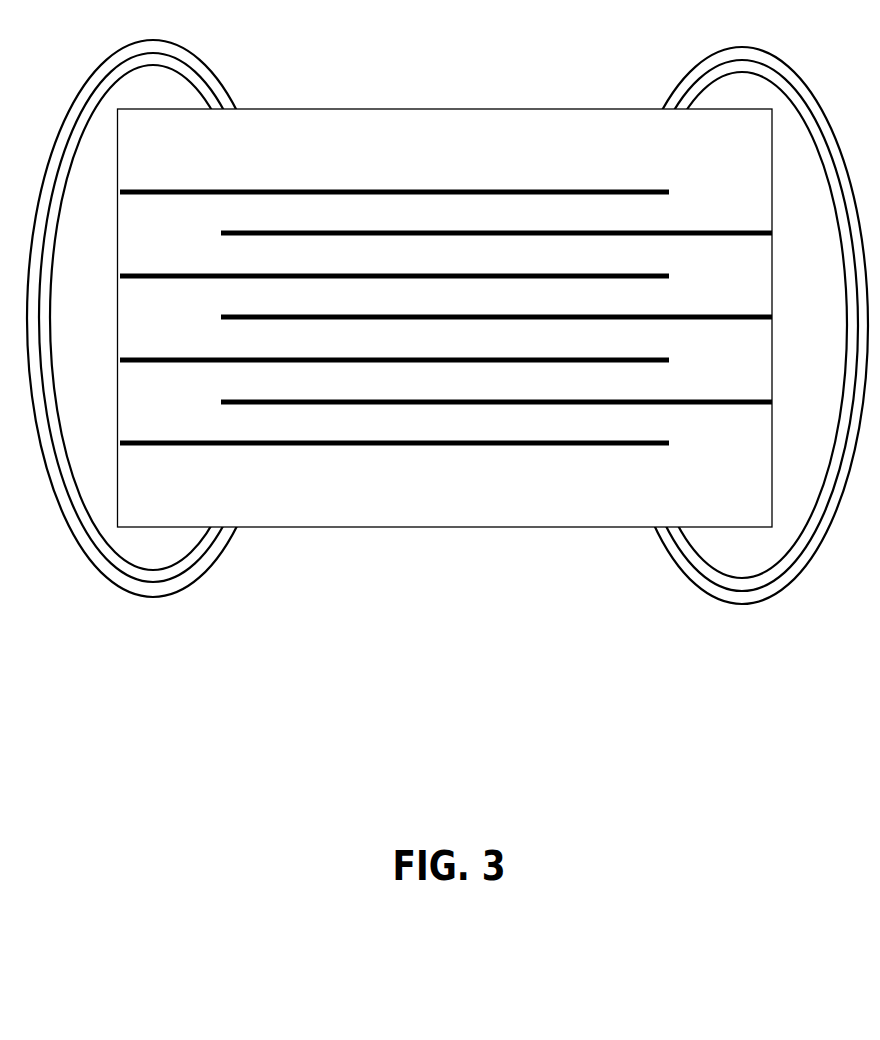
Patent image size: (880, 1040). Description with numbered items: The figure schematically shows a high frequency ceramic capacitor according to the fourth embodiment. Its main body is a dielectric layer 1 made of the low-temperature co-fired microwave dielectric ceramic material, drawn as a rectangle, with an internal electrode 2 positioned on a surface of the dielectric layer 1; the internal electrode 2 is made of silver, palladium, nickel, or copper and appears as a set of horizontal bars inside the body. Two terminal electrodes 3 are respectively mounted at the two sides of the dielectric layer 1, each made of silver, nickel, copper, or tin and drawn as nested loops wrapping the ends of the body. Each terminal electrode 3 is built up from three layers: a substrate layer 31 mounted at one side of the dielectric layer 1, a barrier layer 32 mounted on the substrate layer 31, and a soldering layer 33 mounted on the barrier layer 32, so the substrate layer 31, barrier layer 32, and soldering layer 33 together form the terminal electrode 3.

The dielectric layer 1 is at (383, 122).
The internal electrode 2 is at (505, 172).
The terminal electrode 3 is at (447, 397).
The substrate layer 31 is at (283, 678).
The barrier layer 32 is at (173, 575).
The soldering layer 33 is at (215, 557).